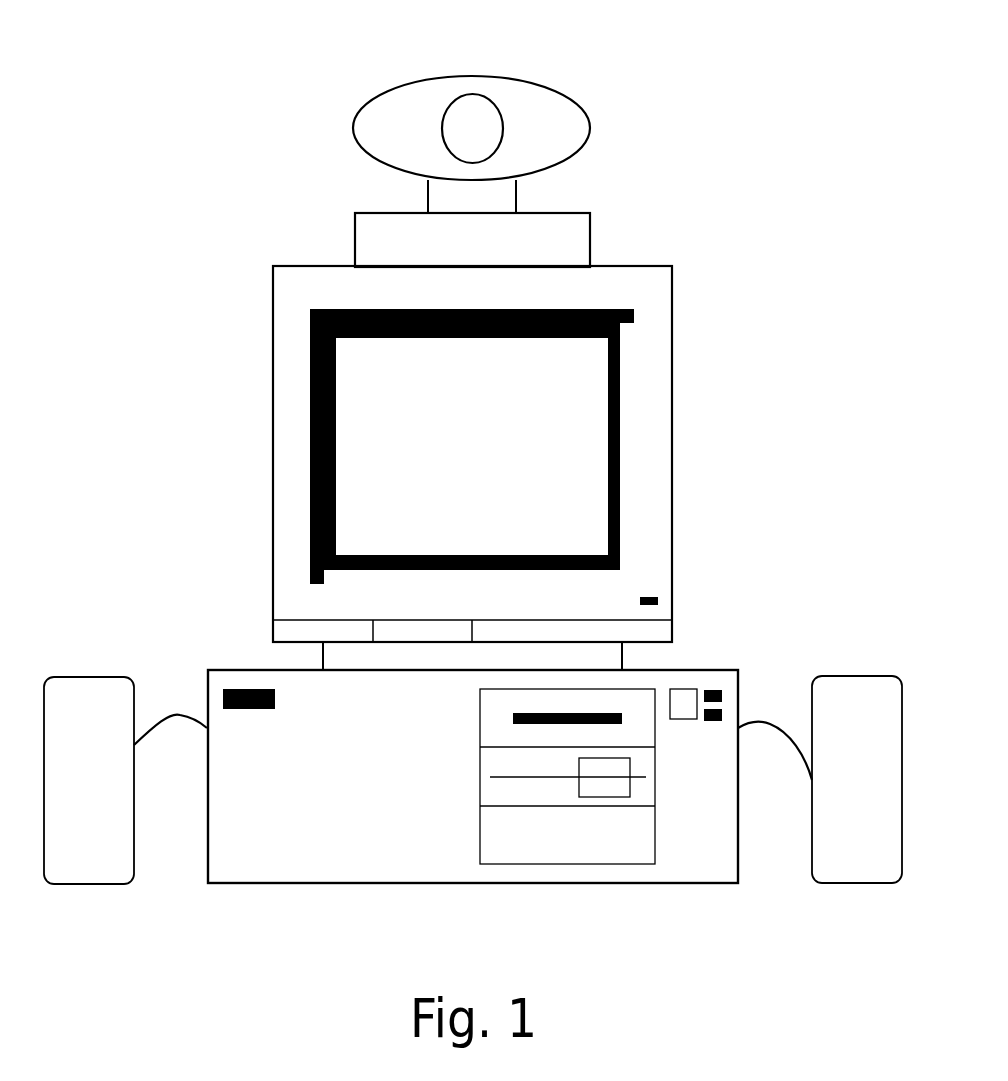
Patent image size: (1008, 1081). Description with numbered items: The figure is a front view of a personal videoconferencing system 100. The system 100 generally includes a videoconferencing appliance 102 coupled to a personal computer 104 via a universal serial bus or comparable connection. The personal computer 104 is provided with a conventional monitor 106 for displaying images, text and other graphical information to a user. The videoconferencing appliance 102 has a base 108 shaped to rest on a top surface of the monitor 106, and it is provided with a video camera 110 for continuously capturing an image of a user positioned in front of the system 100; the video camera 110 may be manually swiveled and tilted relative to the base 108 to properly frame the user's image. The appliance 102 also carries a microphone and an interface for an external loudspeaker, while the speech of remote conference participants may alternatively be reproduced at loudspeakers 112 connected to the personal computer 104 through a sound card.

The personal videoconferencing system 100 is at (268, 906).
The videoconferencing appliance 102 is at (538, 82).
The personal computer 104 is at (672, 670).
The monitor 106 is at (672, 320).
The base 108 is at (535, 212).
The video camera 110 is at (455, 95).
The loudspeakers 112 is at (63, 677).